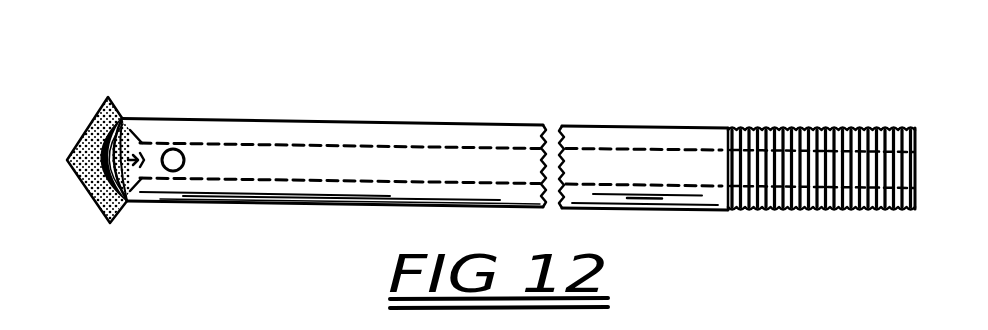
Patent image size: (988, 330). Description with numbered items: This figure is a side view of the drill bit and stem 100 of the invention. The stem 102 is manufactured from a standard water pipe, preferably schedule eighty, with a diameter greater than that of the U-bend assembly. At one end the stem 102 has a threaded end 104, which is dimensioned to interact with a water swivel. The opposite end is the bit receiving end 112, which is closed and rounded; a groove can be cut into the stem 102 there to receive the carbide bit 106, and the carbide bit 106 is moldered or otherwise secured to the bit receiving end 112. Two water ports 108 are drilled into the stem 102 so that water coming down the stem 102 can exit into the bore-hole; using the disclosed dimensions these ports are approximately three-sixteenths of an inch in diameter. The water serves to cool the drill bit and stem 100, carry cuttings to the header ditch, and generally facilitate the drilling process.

The drill bit and stem 100 is at (303, 98).
The stem 102 is at (455, 122).
The threaded end 104 is at (830, 127).
The carbide bit 106 is at (84, 127).
The water ports 108 is at (173, 160).
The bit receiving end 112 is at (93, 181).